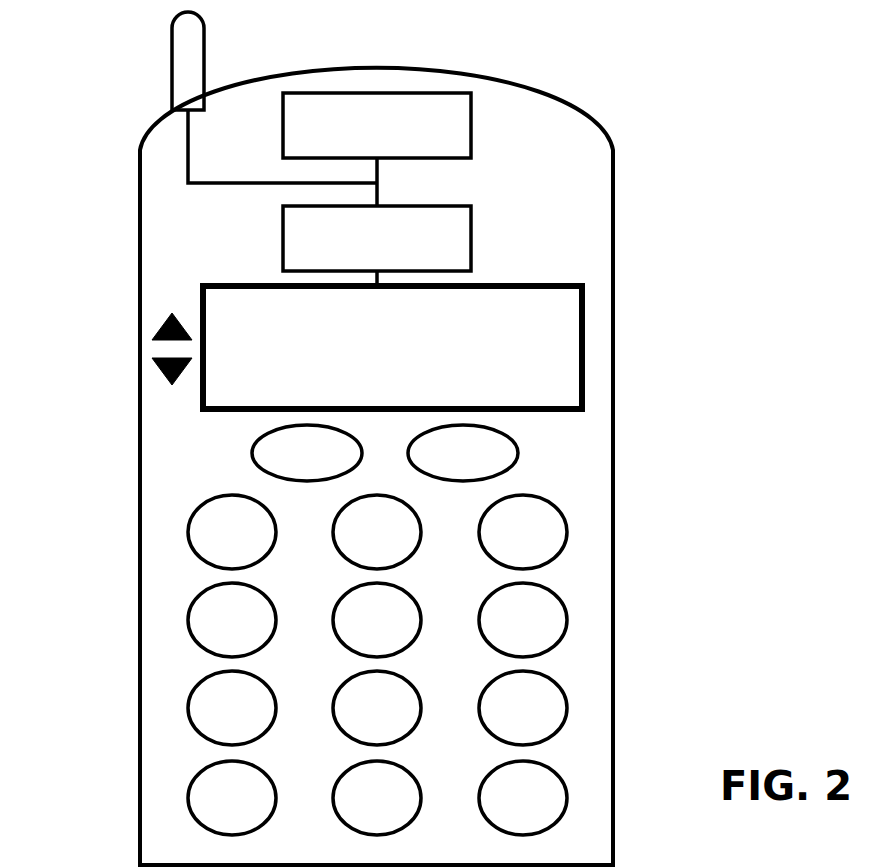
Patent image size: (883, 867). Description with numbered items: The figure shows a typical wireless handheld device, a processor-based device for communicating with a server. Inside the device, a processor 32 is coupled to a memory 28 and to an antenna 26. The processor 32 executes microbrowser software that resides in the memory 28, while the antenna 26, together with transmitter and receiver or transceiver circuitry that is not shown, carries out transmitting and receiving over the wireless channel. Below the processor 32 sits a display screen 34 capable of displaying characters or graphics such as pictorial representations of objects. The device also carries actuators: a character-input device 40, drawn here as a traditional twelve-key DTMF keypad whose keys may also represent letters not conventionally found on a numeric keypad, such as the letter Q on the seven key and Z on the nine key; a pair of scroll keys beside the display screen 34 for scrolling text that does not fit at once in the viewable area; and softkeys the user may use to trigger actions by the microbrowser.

The antenna 26 is at (172, 62).
The memory 28 is at (470, 93).
The processor 32 is at (472, 238).
The display screen 34 is at (583, 340).
The character-input device 40 is at (172, 490).